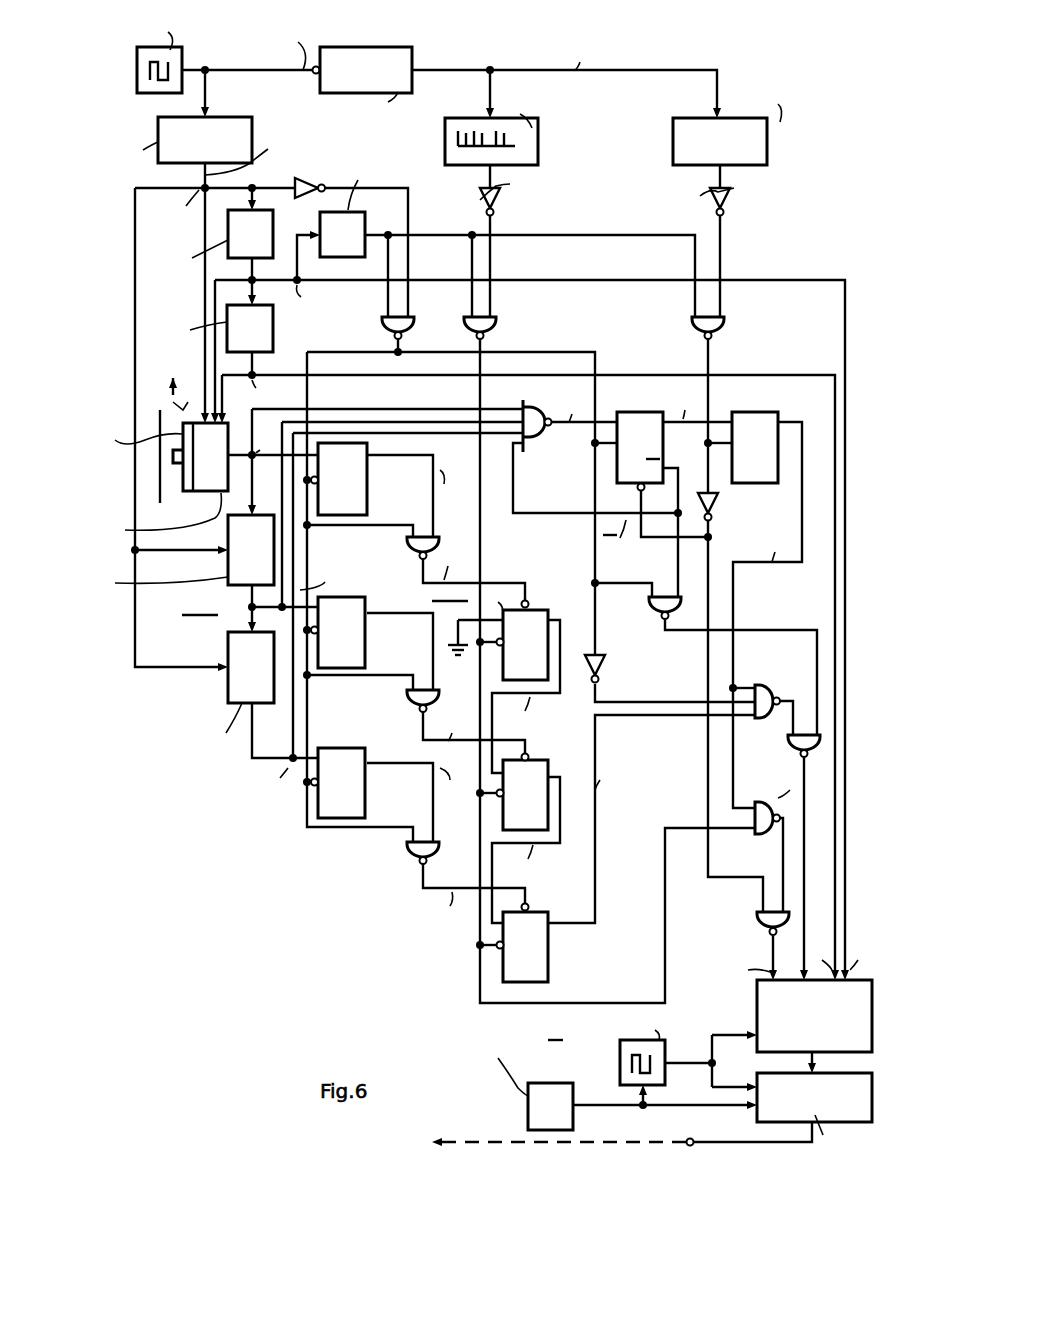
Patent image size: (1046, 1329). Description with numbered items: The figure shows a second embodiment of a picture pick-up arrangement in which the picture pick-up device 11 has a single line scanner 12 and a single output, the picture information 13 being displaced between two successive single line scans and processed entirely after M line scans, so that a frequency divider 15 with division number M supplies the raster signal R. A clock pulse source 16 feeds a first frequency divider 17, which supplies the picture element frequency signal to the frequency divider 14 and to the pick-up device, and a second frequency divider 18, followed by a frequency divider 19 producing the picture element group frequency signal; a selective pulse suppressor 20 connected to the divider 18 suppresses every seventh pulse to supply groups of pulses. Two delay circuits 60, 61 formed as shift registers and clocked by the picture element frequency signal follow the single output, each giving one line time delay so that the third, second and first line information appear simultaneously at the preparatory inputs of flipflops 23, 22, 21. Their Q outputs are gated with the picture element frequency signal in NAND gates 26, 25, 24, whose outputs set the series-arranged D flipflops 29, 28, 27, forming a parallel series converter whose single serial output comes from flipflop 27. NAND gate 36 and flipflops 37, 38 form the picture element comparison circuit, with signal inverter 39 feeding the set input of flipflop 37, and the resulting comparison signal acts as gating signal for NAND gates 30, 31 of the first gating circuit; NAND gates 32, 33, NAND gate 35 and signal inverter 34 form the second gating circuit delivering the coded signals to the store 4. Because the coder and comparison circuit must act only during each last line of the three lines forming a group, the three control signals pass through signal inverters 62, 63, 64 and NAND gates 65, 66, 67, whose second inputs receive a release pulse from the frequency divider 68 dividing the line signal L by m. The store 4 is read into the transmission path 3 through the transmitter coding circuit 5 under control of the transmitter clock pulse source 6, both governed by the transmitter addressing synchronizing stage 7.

The clock pulse source 16 is at (182, 64).
The first frequency divider 17 is at (250, 126).
The second frequency divider 18 is at (412, 85).
The frequency divider 19 is at (768, 144).
The selective pulse suppressor 20 is at (540, 144).
The signal inverter 62 is at (317, 180).
The frequency divider 14 is at (273, 224).
The frequency divider 68 is at (345, 258).
The signal inverter 63 is at (501, 210).
The signal inverter 64 is at (712, 210).
The frequency divider 15 is at (273, 330).
The NAND gate 65 is at (382, 324).
The NAND gate 66 is at (466, 324).
The NAND gate 67 is at (692, 322).
The picture pick-up device 11 is at (215, 491).
The single line scanner 12 is at (198, 421).
The picture information 13 is at (158, 411).
The delay circuit 60 is at (228, 576).
The delay circuit 61 is at (228, 696).
The flipflop 23 is at (367, 480).
The flipflop 22 is at (365, 630).
The flipflop 21 is at (367, 789).
The NAND gate 26 is at (407, 550).
The NAND gate 25 is at (410, 702).
The NAND gate 24 is at (407, 858).
The D flipflop 29 is at (533, 604).
The D flipflop 28 is at (538, 761).
The D flipflop 27 is at (540, 910).
The NAND gate 36 is at (533, 440).
The flipflop 37 is at (637, 412).
The flipflop 38 is at (741, 412).
The signal inverter 39 is at (712, 503).
The NAND gate 35 is at (655, 612).
The signal inverter 34 is at (605, 668).
The NAND gate 30 is at (768, 718).
The NAND gate 32 is at (796, 755).
The NAND gate 31 is at (768, 836).
The NAND gate 33 is at (757, 929).
The store 4 is at (757, 1012).
The transmitter coding circuit 5 is at (761, 1118).
The transmitter clock pulse source 6 is at (620, 1065).
The transmitter addressing synchronizing stage 7 is at (528, 1107).
The transmission path 3 is at (484, 1142).